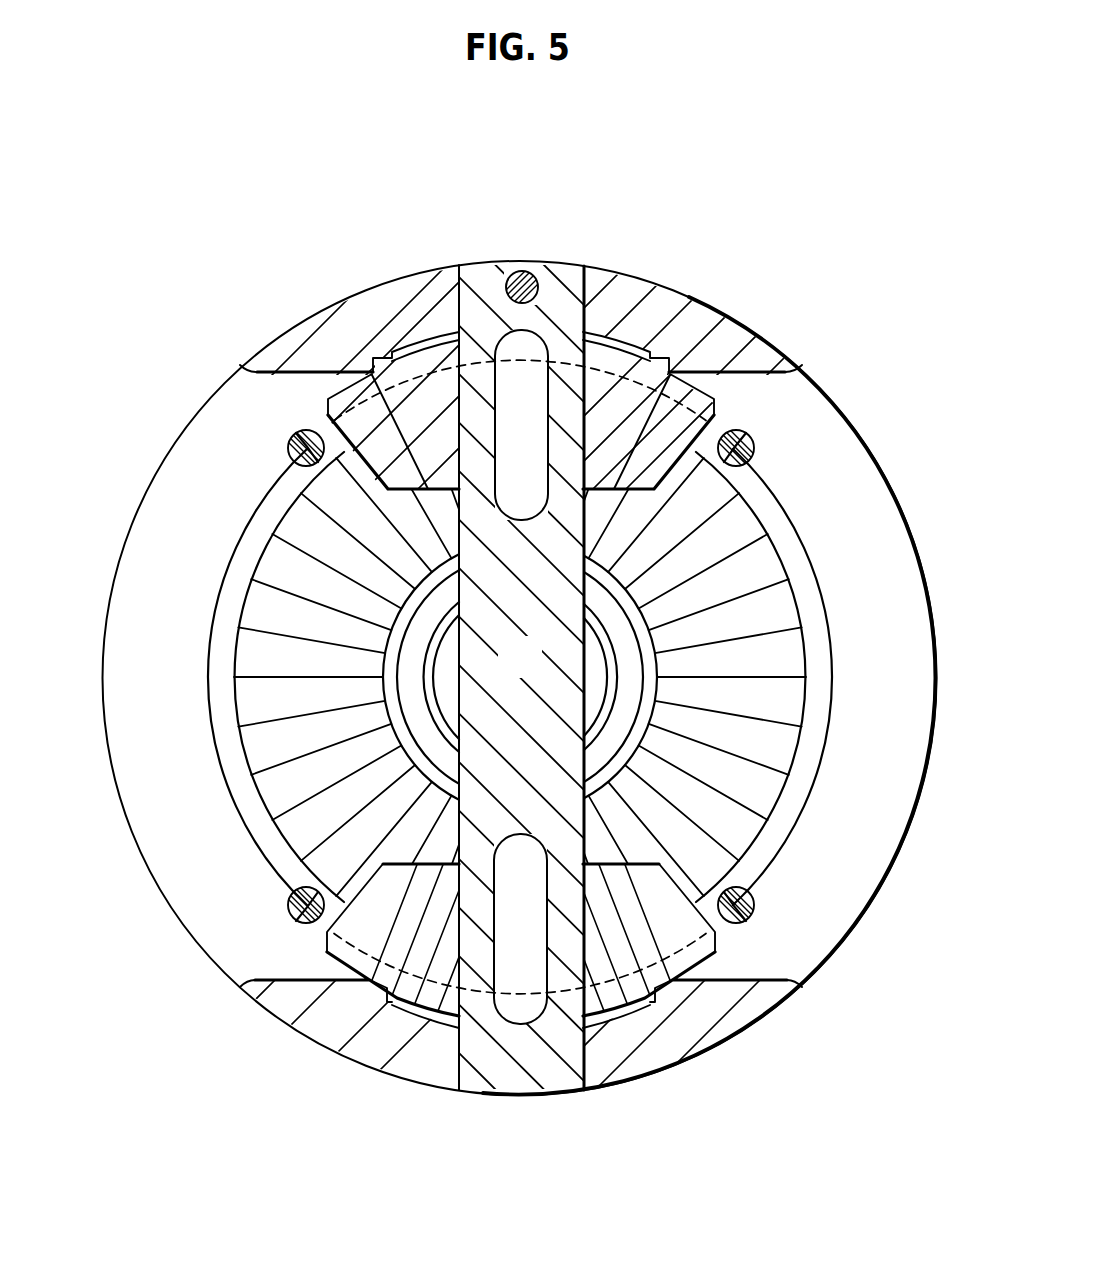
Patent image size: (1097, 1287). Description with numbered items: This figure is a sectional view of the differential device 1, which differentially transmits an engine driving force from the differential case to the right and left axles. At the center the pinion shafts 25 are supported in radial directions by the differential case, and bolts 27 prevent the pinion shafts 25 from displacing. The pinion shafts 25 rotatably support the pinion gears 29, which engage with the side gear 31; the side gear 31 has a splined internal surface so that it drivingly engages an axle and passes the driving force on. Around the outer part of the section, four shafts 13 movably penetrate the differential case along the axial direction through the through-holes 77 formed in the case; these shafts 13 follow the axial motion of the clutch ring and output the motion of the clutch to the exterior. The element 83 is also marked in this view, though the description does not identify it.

The differential device 1 is at (772, 182).
The shafts 13 is at (296, 440).
The pinion shafts 25 is at (503, 673).
The bolts 27 is at (528, 273).
The pinion gears 29 is at (330, 372).
The side gear 31 is at (763, 669).
The through-holes 77 is at (291, 453).
The cover 83 is at (388, 1054).